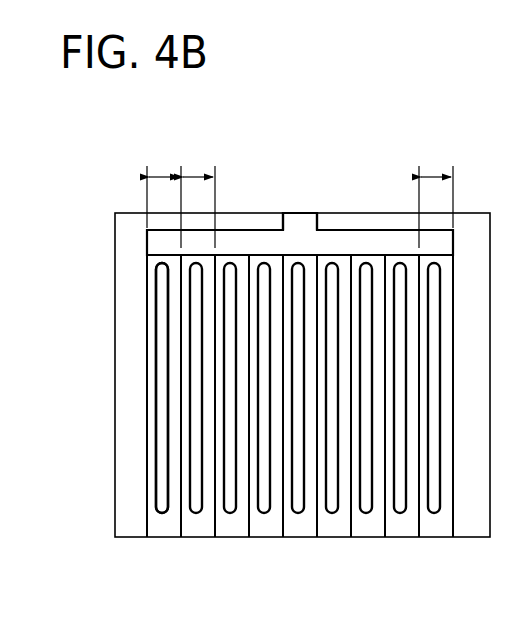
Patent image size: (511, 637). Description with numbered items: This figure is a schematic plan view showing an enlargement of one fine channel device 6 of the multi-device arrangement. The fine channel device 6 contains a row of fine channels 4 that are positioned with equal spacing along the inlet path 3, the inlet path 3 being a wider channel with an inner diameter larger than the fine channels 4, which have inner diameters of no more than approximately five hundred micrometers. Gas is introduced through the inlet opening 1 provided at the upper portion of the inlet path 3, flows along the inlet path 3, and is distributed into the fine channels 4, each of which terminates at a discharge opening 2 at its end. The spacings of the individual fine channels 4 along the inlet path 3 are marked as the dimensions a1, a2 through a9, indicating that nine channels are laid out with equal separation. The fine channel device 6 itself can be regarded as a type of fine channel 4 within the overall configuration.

The inlet opening 1 is at (306, 208).
The discharge opening 2 is at (349, 541).
The inlet path 3 is at (352, 238).
The fine channel 4 is at (146, 369).
The fine channel device 6 is at (465, 212).
The cell width a1 is at (164, 195).
The cell width a2 is at (199, 195).
The cell width a9 is at (436, 195).